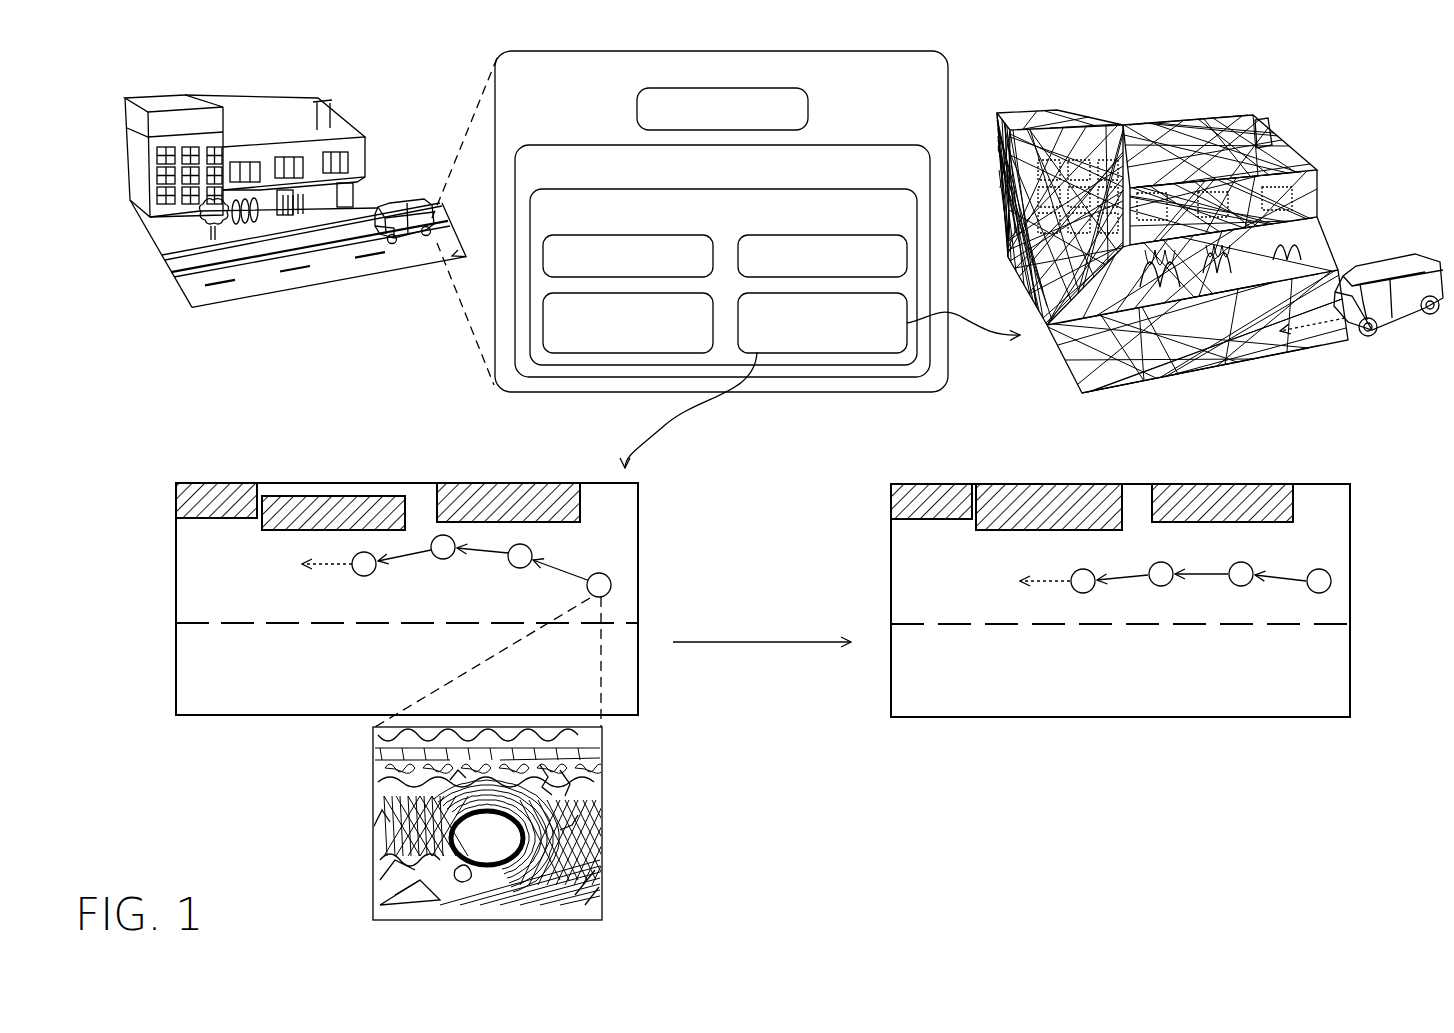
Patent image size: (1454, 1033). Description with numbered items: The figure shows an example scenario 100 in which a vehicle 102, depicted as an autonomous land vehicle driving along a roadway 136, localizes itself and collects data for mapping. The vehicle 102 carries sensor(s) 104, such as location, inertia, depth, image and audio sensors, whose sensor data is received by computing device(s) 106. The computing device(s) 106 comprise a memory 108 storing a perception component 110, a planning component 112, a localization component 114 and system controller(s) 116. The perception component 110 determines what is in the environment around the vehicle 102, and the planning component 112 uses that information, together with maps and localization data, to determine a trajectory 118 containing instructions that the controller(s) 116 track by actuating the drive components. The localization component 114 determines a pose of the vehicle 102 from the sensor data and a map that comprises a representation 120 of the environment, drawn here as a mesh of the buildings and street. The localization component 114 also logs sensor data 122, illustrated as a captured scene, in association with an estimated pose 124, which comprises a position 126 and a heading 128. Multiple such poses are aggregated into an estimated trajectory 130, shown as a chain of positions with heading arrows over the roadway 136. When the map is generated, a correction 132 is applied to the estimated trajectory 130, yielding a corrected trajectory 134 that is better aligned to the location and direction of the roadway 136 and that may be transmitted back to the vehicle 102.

The example scenario 100 is at (150, 78).
The vehicle 102 is at (969, 259).
The sensor(s) 104 is at (722, 109).
The computing device(s) 106 is at (722, 261).
The memory 108 is at (723, 277).
The perception component 110 is at (628, 256).
The planning component 112 is at (822, 256).
The localization component 114 is at (822, 323).
The system controller(s) 116 is at (628, 323).
The trajectory 118 is at (1337, 328).
The representation 120 is at (1210, 115).
The sensor data 122 is at (600, 836).
The pose 124 is at (588, 588).
The position 126 is at (631, 594).
The heading 128 is at (567, 572).
The estimated trajectory 130 is at (504, 536).
The correction 132 is at (762, 657).
The corrected trajectory 134 is at (1172, 555).
The roadway 136 is at (253, 304).